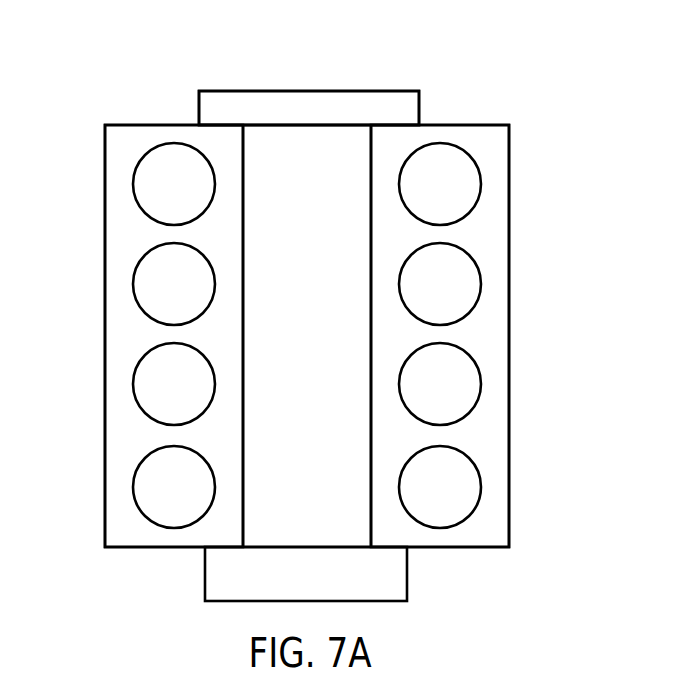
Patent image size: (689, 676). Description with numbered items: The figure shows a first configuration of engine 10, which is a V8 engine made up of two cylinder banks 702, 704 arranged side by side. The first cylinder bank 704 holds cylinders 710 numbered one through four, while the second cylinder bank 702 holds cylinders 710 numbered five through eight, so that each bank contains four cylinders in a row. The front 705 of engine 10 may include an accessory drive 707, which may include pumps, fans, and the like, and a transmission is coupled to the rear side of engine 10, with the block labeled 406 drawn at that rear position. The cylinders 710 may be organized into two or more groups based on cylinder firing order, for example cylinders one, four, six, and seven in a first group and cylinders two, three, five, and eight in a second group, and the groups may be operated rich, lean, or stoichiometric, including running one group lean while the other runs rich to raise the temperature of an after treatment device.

The engine 10 is at (325, 52).
The second cylinder bank 702 is at (158, 47).
The first cylinder bank 704 is at (466, 91).
The front 705 is at (298, 78).
The accessory drive 707 is at (309, 108).
The exhaust 406 is at (306, 574).
The cylinders 710 is at (133, 185).